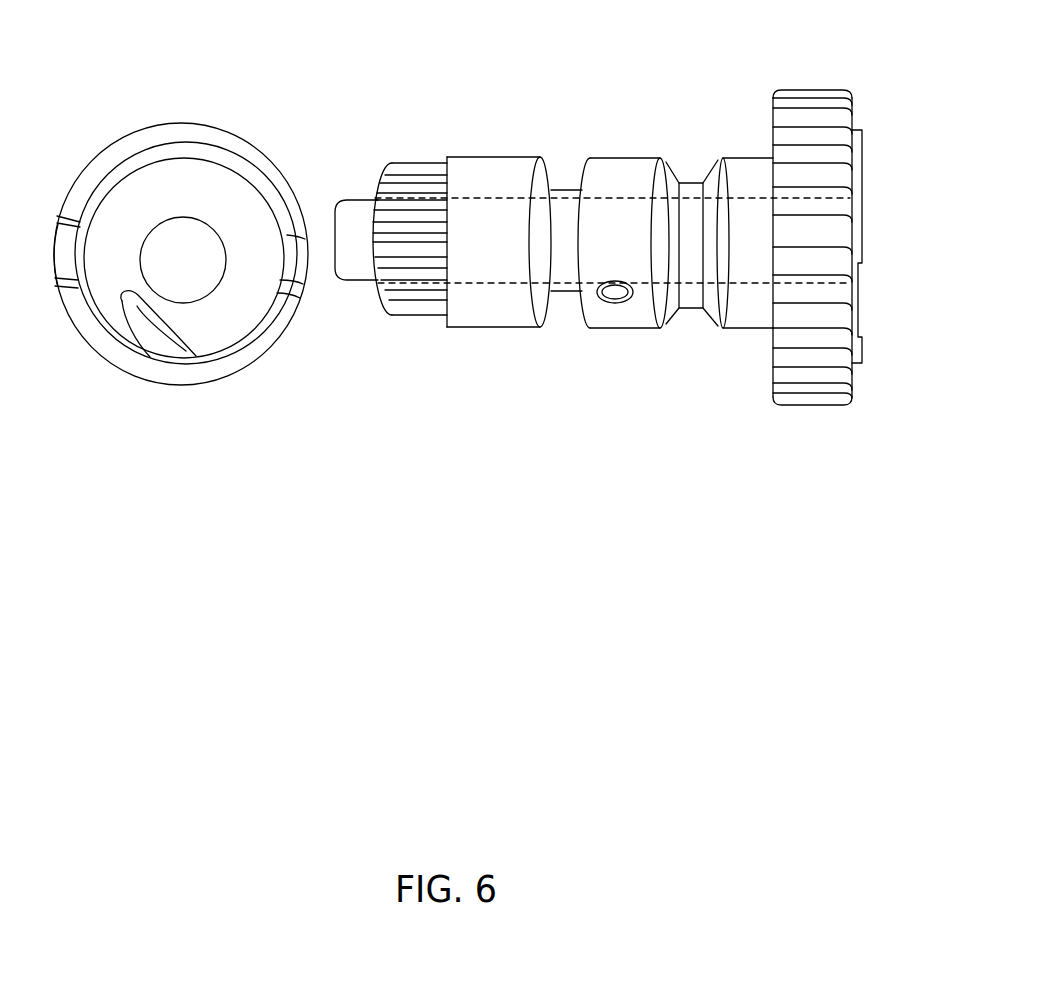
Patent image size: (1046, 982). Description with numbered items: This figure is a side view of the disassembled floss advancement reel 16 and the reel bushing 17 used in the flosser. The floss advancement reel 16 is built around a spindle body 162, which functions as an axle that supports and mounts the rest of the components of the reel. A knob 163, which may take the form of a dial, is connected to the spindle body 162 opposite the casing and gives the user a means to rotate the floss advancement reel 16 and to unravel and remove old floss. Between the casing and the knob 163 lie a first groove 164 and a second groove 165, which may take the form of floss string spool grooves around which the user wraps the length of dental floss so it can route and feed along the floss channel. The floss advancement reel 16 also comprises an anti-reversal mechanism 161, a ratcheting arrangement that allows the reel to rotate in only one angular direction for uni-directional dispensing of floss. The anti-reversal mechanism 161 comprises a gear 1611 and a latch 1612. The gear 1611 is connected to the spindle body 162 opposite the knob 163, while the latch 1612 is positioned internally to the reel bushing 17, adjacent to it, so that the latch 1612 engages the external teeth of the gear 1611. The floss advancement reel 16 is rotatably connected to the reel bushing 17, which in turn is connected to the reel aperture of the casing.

The floss advancement reel 16 is at (576, 264).
The anti-reversal mechanism 161 is at (170, 342).
The gear 1611 is at (418, 314).
The latch 1612 is at (207, 338).
The spindle body 162 is at (377, 200).
The knob 163 is at (778, 90).
The first groove 164 is at (575, 188).
The second groove 165 is at (688, 183).
The reel bushing 17 is at (86, 338).